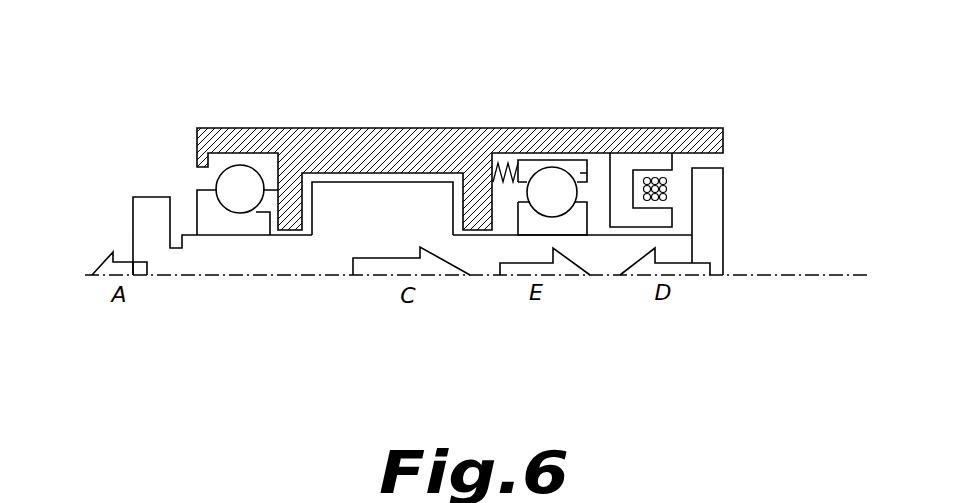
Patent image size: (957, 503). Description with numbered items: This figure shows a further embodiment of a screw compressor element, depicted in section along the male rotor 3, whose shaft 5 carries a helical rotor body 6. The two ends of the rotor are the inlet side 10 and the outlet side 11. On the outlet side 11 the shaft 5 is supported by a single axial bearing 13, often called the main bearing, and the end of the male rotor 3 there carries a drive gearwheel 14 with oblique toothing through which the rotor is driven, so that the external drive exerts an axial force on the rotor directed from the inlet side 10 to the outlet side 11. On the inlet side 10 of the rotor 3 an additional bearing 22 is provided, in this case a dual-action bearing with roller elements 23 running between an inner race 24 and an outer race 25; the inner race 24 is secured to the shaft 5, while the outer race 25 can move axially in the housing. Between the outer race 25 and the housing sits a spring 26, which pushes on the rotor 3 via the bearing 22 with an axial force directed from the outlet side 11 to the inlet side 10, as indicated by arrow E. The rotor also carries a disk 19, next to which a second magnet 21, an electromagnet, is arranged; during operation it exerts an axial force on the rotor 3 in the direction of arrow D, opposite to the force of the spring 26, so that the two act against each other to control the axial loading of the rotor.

The male rotor 3 is at (270, 263).
The shaft 5 is at (717, 255).
The helical rotor body 6 is at (362, 210).
The inlet side 10 is at (478, 95).
The outlet side 11 is at (293, 90).
The axial bearing 13 is at (232, 188).
The drive gearwheel 14 is at (147, 212).
The disk 19 is at (718, 183).
The second magnet 21 is at (637, 220).
The additional bearing 22 is at (600, 192).
The roller elements 23 is at (555, 187).
The inner race 24 is at (545, 227).
The outer race 25 is at (640, 128).
The spring 26 is at (512, 163).